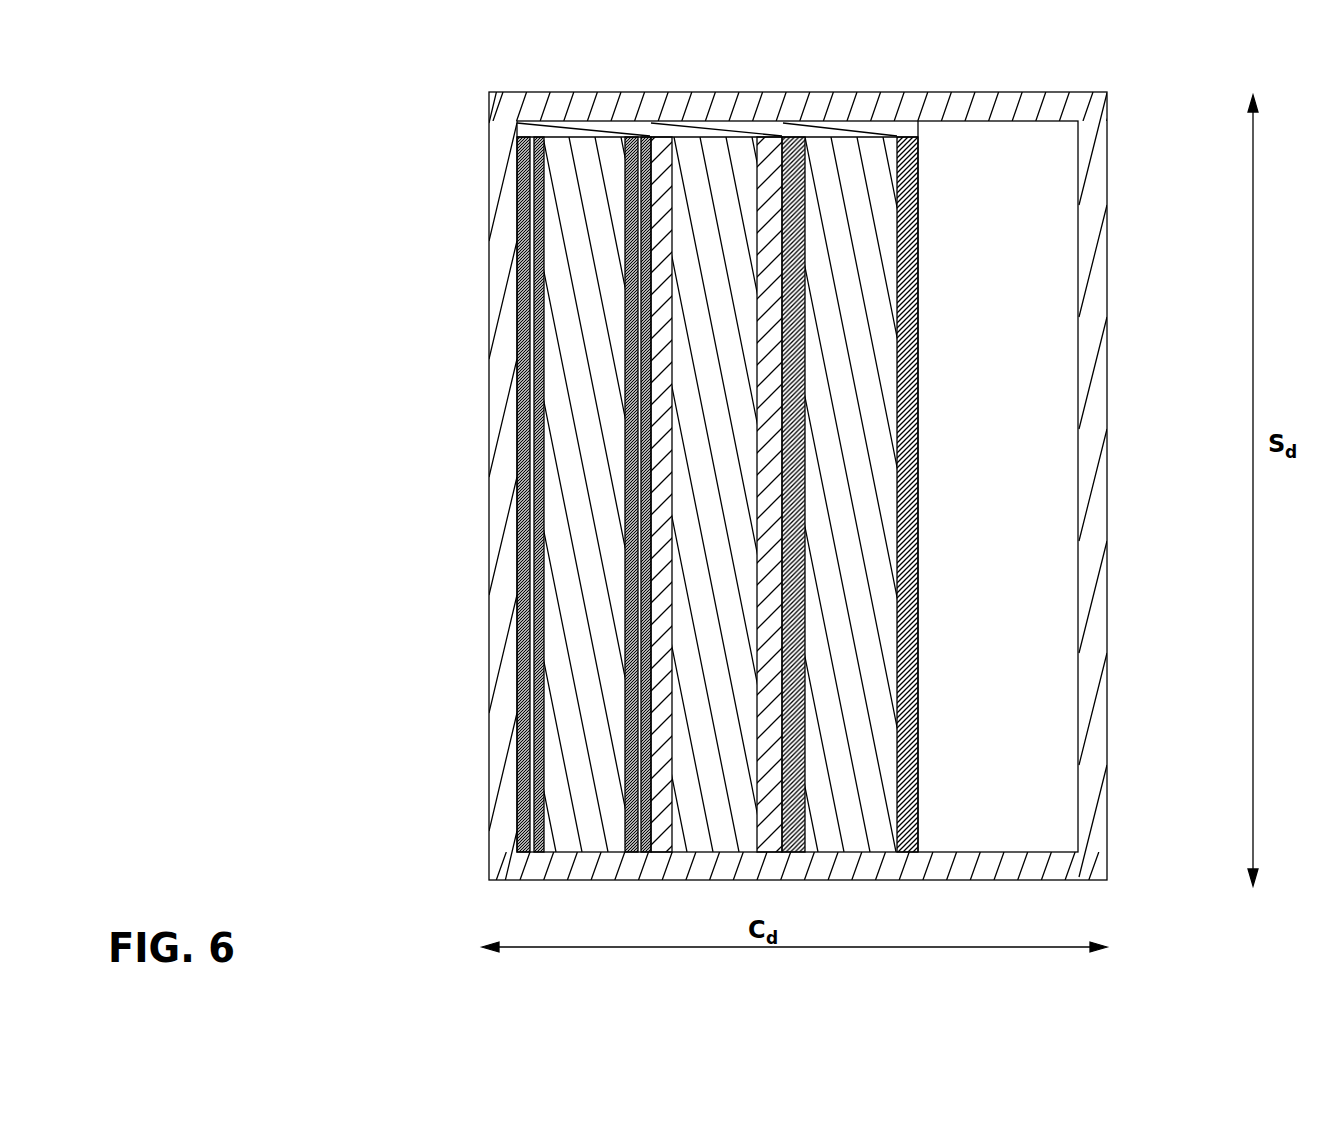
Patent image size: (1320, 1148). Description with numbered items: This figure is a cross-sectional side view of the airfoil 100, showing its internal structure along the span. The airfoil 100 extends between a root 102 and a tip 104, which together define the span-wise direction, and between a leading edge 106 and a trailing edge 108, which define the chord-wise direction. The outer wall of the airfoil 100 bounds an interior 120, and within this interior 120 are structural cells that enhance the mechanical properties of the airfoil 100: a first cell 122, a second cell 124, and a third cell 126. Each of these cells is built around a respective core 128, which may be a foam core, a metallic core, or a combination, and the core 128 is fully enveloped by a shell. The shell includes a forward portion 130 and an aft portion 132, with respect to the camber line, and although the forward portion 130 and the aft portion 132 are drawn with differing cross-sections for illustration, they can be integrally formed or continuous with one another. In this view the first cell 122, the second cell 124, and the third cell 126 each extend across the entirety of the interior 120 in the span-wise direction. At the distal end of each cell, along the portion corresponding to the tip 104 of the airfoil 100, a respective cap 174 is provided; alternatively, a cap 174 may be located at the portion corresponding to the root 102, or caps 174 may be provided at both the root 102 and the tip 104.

The airfoil 100 is at (296, 131).
The root 102 is at (1018, 880).
The tip 104 is at (1070, 92).
The leading edge 106 is at (488, 348).
The trailing edge 108 is at (1108, 339).
The interior 120 is at (1013, 477).
The first cell 122 is at (493, 454).
The second cell 124 is at (714, 864).
The third cell 126 is at (874, 864).
The core 128 is at (543, 652).
The forward portion 130 is at (517, 419).
The aft portion 132 is at (765, 145).
The cap 174 is at (716, 122).